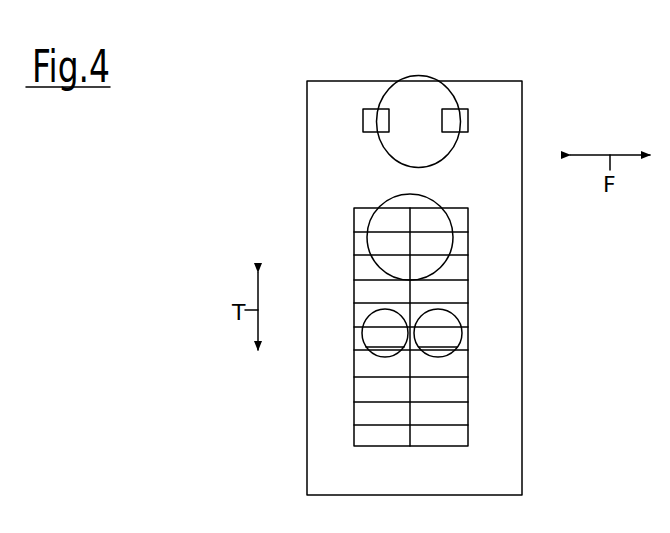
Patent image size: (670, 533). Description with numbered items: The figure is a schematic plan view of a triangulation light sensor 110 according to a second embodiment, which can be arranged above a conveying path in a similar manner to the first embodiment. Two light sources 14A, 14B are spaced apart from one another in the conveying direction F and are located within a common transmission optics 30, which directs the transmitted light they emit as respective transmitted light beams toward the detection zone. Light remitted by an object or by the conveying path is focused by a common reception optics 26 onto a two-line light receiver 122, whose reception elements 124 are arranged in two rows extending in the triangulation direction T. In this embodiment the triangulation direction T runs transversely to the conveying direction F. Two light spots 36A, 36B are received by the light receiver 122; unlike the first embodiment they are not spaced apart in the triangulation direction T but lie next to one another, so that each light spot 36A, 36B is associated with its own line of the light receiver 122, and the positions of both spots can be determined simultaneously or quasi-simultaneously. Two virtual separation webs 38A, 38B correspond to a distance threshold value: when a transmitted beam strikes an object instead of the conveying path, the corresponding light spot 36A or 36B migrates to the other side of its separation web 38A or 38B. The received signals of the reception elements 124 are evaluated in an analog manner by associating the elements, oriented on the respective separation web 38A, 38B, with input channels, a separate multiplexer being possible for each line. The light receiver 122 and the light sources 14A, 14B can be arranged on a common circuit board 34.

The triangulation light sensor 110 is at (242, 148).
The common circuit board 34 is at (522, 435).
The common transmission optics 30 is at (383, 153).
The light source 14A is at (368, 117).
The light source 14B is at (458, 117).
The common reception optics 26 is at (438, 198).
The two-line light receiver 122 is at (474, 327).
The reception elements 124 is at (428, 408).
The light spot 36A is at (463, 325).
The light spot 36B is at (357, 333).
The virtual separation web 38A is at (507, 340).
The virtual separation web 38B is at (326, 384).